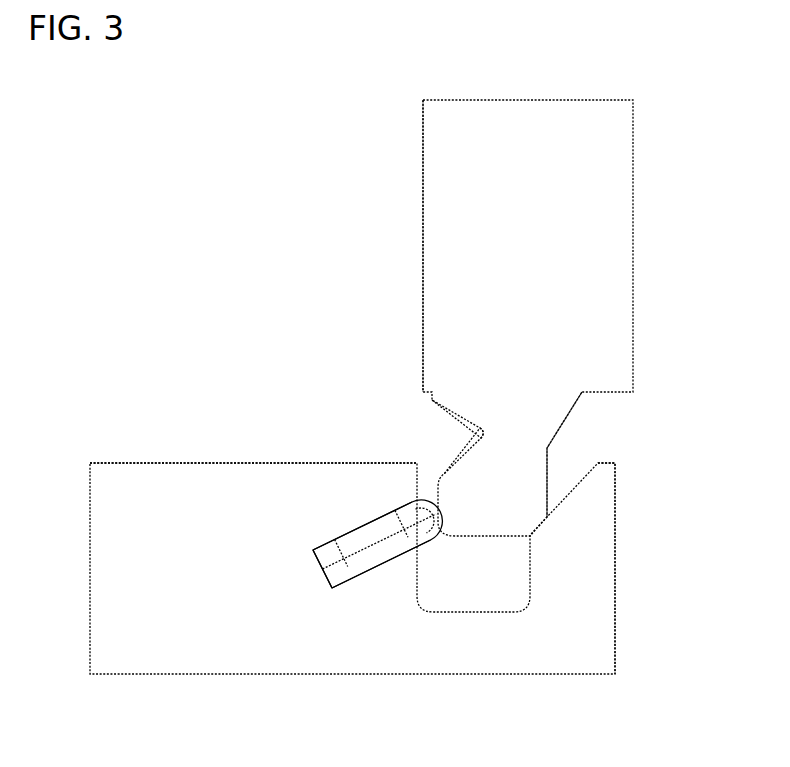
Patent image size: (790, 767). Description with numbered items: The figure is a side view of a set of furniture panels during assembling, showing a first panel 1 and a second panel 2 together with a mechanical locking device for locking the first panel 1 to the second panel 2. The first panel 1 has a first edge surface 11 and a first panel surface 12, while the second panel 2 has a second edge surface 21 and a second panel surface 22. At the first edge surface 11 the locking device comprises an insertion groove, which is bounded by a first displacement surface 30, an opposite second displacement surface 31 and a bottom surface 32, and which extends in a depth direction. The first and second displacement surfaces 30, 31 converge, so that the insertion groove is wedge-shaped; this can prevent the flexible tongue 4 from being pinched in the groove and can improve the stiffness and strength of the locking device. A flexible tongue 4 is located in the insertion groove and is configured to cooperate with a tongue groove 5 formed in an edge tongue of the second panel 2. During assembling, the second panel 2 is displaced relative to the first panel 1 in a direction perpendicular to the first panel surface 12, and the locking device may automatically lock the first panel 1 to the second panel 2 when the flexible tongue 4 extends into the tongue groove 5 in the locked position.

The first panel 1 is at (156, 498).
The first edge surface 11 is at (615, 610).
The first panel surface 12 is at (237, 463).
The second panel 2 is at (577, 248).
The second edge surface 21 is at (592, 425).
The second panel surface 22 is at (423, 235).
The tongue groove 5 is at (452, 435).
The flexible tongue 4 is at (362, 565).
The first displacement surface 30 is at (373, 570).
The second displacement surface 31 is at (379, 513).
The bottom surface 32 is at (318, 573).